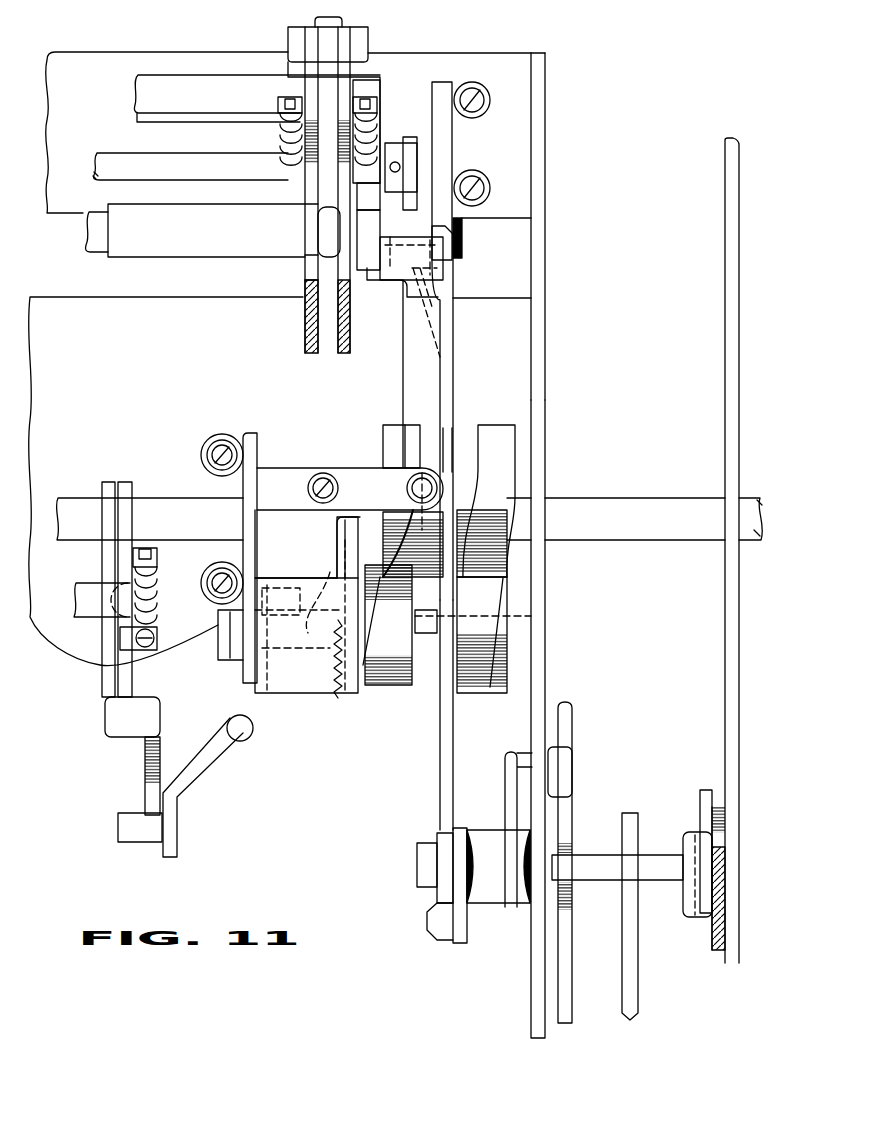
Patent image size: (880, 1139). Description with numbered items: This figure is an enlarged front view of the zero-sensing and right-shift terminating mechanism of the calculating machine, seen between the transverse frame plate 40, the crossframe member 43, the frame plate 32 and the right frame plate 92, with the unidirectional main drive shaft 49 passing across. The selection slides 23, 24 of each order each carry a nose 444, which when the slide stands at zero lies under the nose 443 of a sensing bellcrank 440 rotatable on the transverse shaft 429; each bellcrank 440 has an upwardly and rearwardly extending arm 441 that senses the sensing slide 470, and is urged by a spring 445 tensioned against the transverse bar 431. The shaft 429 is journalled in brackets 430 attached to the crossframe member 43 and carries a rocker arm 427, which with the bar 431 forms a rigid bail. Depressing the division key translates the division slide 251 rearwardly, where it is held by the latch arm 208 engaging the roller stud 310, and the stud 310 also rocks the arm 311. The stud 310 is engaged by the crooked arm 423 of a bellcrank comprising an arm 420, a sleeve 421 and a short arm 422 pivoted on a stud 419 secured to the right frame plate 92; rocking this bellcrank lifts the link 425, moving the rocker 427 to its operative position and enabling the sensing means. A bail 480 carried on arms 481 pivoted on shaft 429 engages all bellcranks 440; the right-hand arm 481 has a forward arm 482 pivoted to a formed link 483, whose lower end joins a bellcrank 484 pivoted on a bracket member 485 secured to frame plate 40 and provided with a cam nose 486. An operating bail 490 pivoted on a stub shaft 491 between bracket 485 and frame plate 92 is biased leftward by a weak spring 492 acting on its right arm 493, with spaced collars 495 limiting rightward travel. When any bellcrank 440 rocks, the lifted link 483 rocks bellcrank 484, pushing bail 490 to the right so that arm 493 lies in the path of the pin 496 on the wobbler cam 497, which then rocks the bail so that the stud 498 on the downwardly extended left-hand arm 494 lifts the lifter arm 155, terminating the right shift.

The selection slide 23 is at (306, 349).
The selection slide 24 is at (350, 349).
The frame plate 32 is at (733, 957).
The crossframe member 40 is at (180, 395).
The crossframe member 43 is at (508, 65).
The main drive shaft 49 is at (585, 509).
The right frame plate 92 is at (542, 984).
The lifter arm 155 is at (150, 760).
The latch arm 208 is at (707, 889).
The division slide 251 is at (715, 929).
The roller stud 310 is at (615, 873).
The arm 311 is at (633, 974).
The stud 419 is at (420, 869).
The arm 420 is at (521, 752).
The sleeve 421 is at (494, 893).
The short arm 422 is at (460, 938).
The crooked arm 423 is at (567, 971).
The link 425 is at (446, 723).
The rocker arm 427 is at (410, 184).
The transverse shaft 429 is at (457, 233).
The bracket 430 is at (443, 153).
The transverse bar 431 is at (153, 163).
The sensing bellcrank 440 is at (309, 248).
The arm 441 is at (345, 76).
The nose 443 is at (310, 266).
The nose 444 is at (306, 298).
The spring 445 is at (367, 148).
The sensing slide 470 is at (358, 40).
The bail 480 is at (241, 88).
The arm 481 is at (370, 190).
The arm 482 is at (371, 272).
The link 483 is at (427, 363).
The bellcrank 484 is at (370, 448).
The bracket member 485 is at (248, 491).
The cam nose 486 is at (337, 700).
The operating bail 490 is at (312, 679).
The stub shaft 491 is at (219, 628).
The spring 492 is at (500, 624).
The right arm 493 is at (353, 554).
The left-hand arm 494 is at (266, 717).
The collar 495 is at (381, 684).
The pin 496 is at (377, 518).
The wobbler cam 497 is at (516, 410).
The stud 498 is at (148, 833).